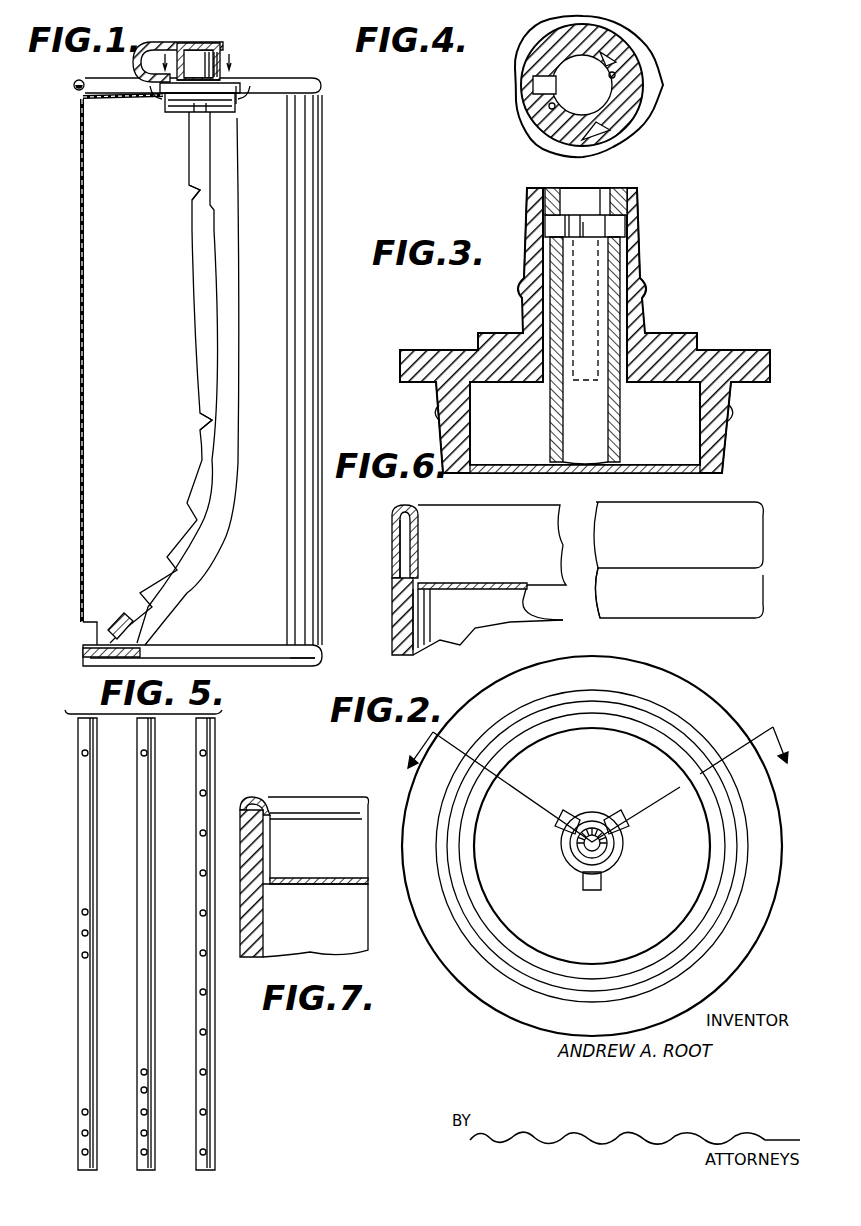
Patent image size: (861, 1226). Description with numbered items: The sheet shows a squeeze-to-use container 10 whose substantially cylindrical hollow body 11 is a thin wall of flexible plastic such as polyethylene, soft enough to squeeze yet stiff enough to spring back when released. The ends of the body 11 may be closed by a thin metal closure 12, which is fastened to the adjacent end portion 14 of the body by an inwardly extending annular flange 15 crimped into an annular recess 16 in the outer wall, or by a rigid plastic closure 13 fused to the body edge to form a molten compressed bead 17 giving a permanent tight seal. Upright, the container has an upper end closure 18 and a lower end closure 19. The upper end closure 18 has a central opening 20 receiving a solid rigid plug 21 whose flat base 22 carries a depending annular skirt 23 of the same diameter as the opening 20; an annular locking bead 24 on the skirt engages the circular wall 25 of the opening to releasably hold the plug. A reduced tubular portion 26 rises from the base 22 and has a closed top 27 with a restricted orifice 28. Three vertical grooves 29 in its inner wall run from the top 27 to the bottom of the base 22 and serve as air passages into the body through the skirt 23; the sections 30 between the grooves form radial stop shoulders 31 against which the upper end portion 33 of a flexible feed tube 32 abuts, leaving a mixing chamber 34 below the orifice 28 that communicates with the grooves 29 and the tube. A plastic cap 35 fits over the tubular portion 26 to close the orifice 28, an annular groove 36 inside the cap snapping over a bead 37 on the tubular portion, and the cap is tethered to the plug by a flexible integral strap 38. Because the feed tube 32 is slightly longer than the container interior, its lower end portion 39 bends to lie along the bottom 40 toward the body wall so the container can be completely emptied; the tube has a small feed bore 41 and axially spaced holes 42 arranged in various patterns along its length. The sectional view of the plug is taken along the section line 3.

In FIG. 1, the container 10 is at (325, 205).
In FIG. 2, the container 10 is at (738, 698).
In FIG. 1, the hollow body 11 is at (316, 352).
In FIG. 6, the hollow body 11 is at (395, 645).
In FIG. 2, the hollow body 11 is at (686, 698).
In FIG. 7, the hollow body 11 is at (245, 934).
In FIG. 1, the metal closure 12 is at (310, 78).
In FIG. 6, the metal closure 12 is at (758, 500).
In FIG. 7, the plastic closure 13 is at (295, 810).
In FIG. 1, the end portion 14 is at (76, 88).
In FIG. 6, the end portion 14 is at (392, 536).
In FIG. 7, the end portion 14 is at (248, 795).
In FIG. 6, the annular flange 15 is at (392, 568).
In FIG. 6, the annular recess 16 is at (396, 550).
In FIG. 7, the molten compressed bead 17 is at (243, 808).
In FIG. 1, the upper end closure 18 is at (122, 100).
In FIG. 1, the lower end closure 19 is at (295, 660).
In FIG. 1, the opening 20 is at (170, 96).
In FIG. 1, the plug 21 is at (214, 110).
In FIG. 3, the plug 21 is at (400, 362).
In FIG. 4, the base 22 is at (650, 102).
In FIG. 3, the base 22 is at (740, 338).
In FIG. 2, the base 22 is at (682, 842).
In FIG. 1, the annular skirt 23 is at (182, 108).
In FIG. 3, the annular skirt 23 is at (726, 440).
In FIG. 1, the annular locking bead 24 is at (232, 104).
In FIG. 3, the annular locking bead 24 is at (731, 412).
In FIG. 1, the circular wall 25 is at (240, 96).
In FIG. 1, the tubular portion 26 is at (195, 43).
In FIG. 4, the tubular portion 26 is at (610, 38).
In FIG. 3, the tubular portion 26 is at (640, 260).
In FIG. 2, the tubular portion 26 is at (580, 870).
In FIG. 3, the top 27 is at (618, 188).
In FIG. 3, the orifice 28 is at (575, 215).
In FIG. 2, the orifice 28 is at (585, 852).
In FIG. 4, the grooves 29 is at (612, 56).
In FIG. 3, the grooves 29 is at (585, 225).
In FIG. 2, the grooves 29 is at (556, 840).
In FIG. 4, the sections 30 is at (618, 78).
In FIG. 3, the stop shoulders 31 is at (600, 228).
In FIG. 1, the feed tube 32 is at (216, 272).
In FIG. 3, the feed tube 32 is at (608, 432).
In FIG. 5, the feed tube 32 is at (96, 855).
In FIG. 3, the upper end portion 33 is at (620, 308).
In FIG. 3, the mixing chamber 34 is at (612, 214).
In FIG. 1, the cap 35 is at (213, 50).
In FIG. 1, the annular groove 36 is at (222, 60).
In FIG. 3, the bead 37 is at (647, 288).
In FIG. 1, the strap 38 is at (148, 42).
In FIG. 1, the lower end portion 39 is at (100, 622).
In FIG. 1, the bottom 40 is at (95, 655).
In FIG. 1, the feed bore 41 is at (201, 172).
In FIG. 1, the holes 42 is at (190, 192).
In FIG. 5, the holes 42 is at (90, 753).
In FIG. 2, the section line 3— 3 is at (590, 784).